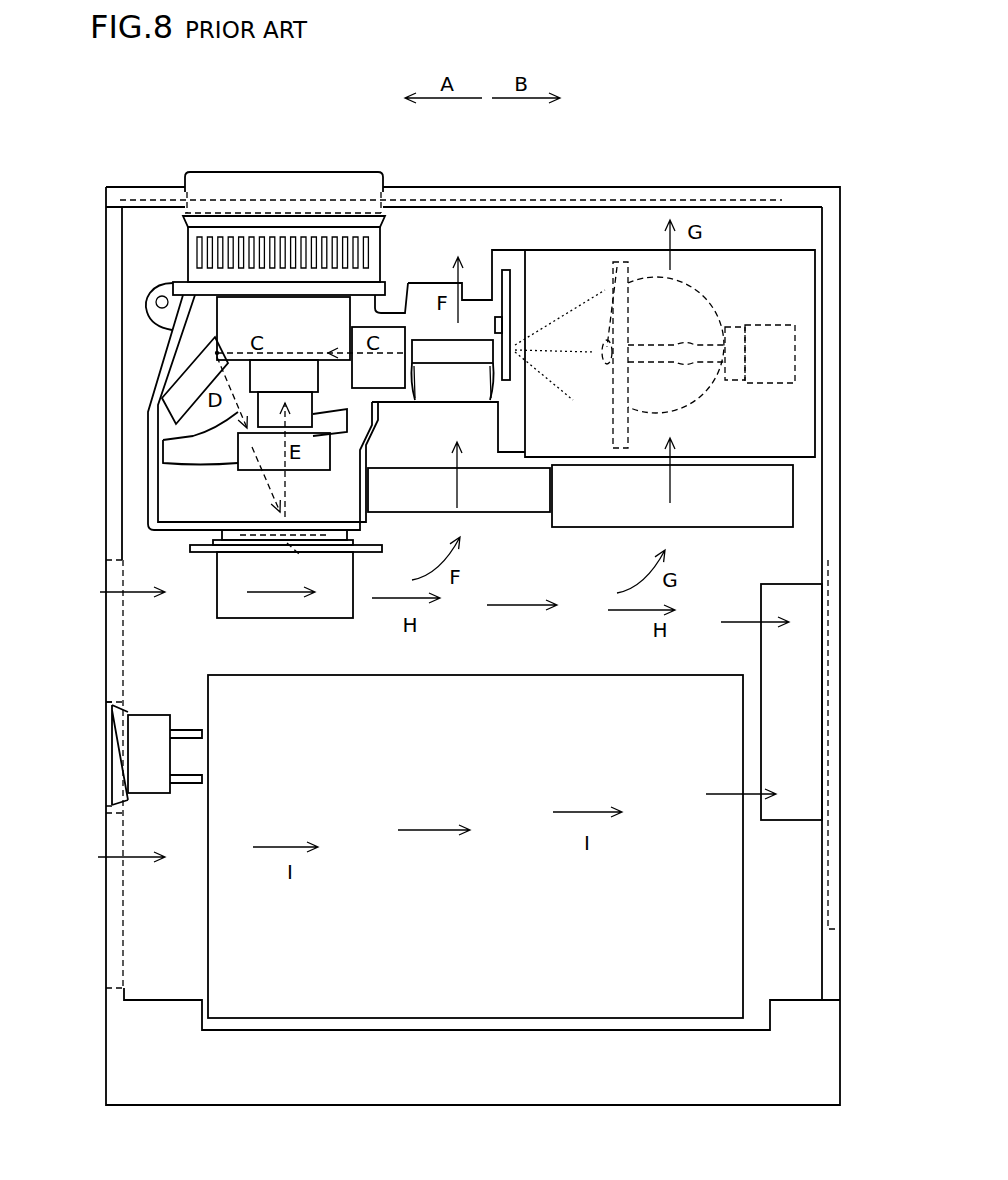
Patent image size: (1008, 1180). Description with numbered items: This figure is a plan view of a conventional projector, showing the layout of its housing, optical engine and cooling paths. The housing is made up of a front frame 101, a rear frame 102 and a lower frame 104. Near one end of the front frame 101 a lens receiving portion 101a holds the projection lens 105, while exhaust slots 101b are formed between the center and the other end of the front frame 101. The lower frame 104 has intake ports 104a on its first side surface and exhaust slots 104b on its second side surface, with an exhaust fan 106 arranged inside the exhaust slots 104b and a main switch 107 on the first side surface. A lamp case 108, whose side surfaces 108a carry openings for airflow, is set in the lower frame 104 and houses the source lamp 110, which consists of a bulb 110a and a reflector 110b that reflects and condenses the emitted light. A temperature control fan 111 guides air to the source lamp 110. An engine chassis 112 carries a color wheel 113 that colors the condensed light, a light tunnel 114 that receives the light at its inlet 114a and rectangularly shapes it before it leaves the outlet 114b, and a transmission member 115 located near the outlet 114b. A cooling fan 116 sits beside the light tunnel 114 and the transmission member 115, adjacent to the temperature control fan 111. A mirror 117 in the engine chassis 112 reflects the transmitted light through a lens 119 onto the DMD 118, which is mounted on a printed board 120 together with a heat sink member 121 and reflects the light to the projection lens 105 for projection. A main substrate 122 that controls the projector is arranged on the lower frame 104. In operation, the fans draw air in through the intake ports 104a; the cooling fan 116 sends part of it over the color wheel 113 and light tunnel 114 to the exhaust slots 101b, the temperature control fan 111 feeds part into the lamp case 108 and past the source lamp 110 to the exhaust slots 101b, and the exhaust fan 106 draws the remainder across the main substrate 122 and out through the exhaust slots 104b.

The front frame 101 is at (146, 196).
The lens receiving portion 101a is at (190, 198).
The exhaust slots 101b is at (612, 198).
The rear frame 102 is at (800, 1068).
The lower frame 104 is at (115, 510).
The intake ports 104a is at (115, 642).
The exhaust slots 104b is at (834, 706).
The projection lens 105 is at (288, 190).
The exhaust fan 106 is at (809, 628).
The main switch 107 is at (145, 763).
The lamp case 108 is at (818, 293).
The side surfaces 108a is at (762, 250).
The source lamp 110 is at (790, 135).
The bulb 110a is at (630, 275).
The reflector 110b is at (660, 308).
The temperature control fan 111 is at (780, 510).
The engine chassis 112 is at (167, 362).
The color wheel 113 is at (505, 297).
The light tunnel 114 is at (473, 347).
The inlet 114a is at (497, 363).
The outlet 114b is at (407, 362).
The transmission member 115 is at (390, 337).
The cooling fan 116 is at (512, 498).
The mirror 117 is at (160, 400).
The DMD 118 is at (300, 555).
The lens 119 is at (207, 447).
The printed board 120 is at (190, 545).
The heat sink member 121 is at (237, 597).
The main substrate 122 is at (465, 698).